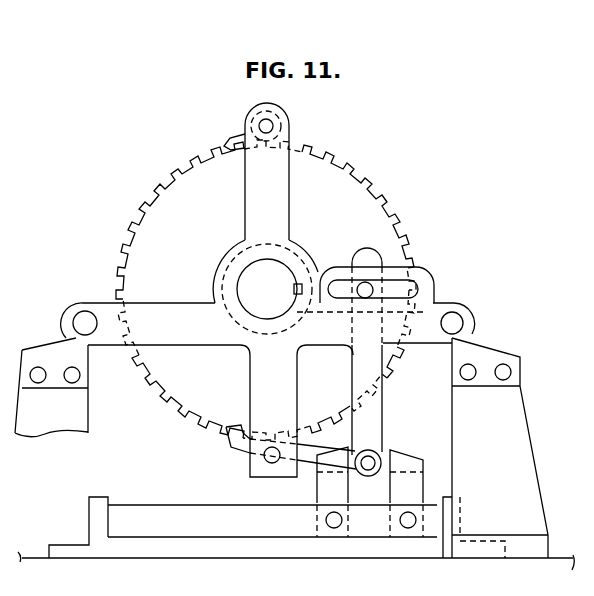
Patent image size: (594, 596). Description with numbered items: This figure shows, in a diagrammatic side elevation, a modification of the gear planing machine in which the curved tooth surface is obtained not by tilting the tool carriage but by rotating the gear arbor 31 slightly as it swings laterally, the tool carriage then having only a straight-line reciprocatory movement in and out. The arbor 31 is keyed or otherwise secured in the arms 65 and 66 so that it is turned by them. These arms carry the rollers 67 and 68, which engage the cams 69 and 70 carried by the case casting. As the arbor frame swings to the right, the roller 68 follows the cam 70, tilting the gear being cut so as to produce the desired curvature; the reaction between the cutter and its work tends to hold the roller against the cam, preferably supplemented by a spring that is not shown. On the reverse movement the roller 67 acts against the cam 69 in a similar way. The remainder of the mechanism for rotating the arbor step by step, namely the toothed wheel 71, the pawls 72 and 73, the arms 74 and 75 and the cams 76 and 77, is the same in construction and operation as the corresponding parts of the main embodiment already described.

The gear arbor 31 is at (250, 280).
The arm 65 is at (178, 308).
The arm 66 is at (433, 343).
The roller 67 is at (85, 317).
The roller 68 is at (456, 324).
The cam 69 is at (45, 350).
The cam 70 is at (500, 359).
The toothed wheel 71 is at (373, 208).
The pawl 72 is at (244, 137).
The pawl 73 is at (233, 444).
The arm 74 is at (334, 272).
The arm 75 is at (381, 429).
The cam 76 is at (410, 488).
The cam 77 is at (322, 488).